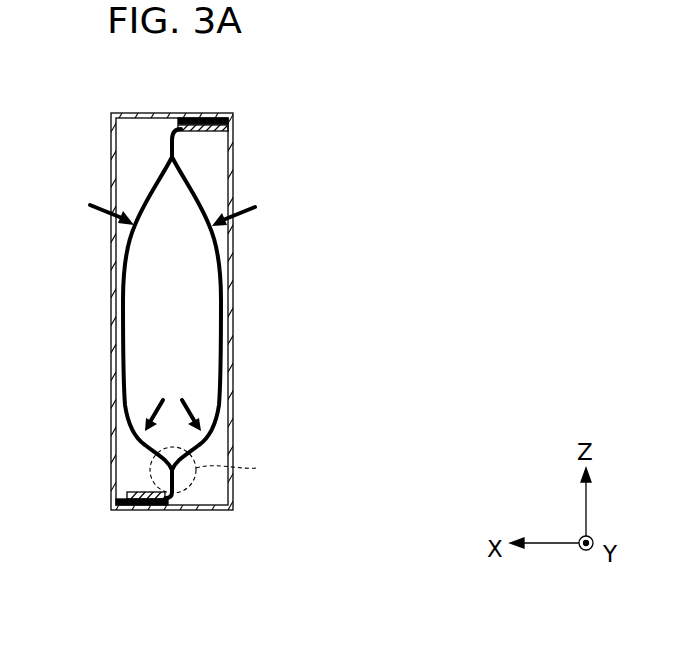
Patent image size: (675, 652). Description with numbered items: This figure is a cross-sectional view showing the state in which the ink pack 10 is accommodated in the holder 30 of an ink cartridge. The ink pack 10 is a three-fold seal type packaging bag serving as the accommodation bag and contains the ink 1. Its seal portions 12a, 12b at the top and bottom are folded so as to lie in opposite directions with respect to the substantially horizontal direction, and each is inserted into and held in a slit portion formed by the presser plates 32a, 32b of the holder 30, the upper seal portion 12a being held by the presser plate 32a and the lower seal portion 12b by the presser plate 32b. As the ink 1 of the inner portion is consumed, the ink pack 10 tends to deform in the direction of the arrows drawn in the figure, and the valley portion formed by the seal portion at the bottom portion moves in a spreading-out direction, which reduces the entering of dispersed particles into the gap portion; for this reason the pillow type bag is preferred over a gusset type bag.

The ink 1 is at (231, 311).
The ink pack 10 is at (157, 187).
The holder 30 is at (111, 190).
The seal portion 12a is at (197, 118).
The presser plate 32a is at (201, 129).
The seal portion 12b is at (143, 508).
The presser plate 32b is at (135, 491).